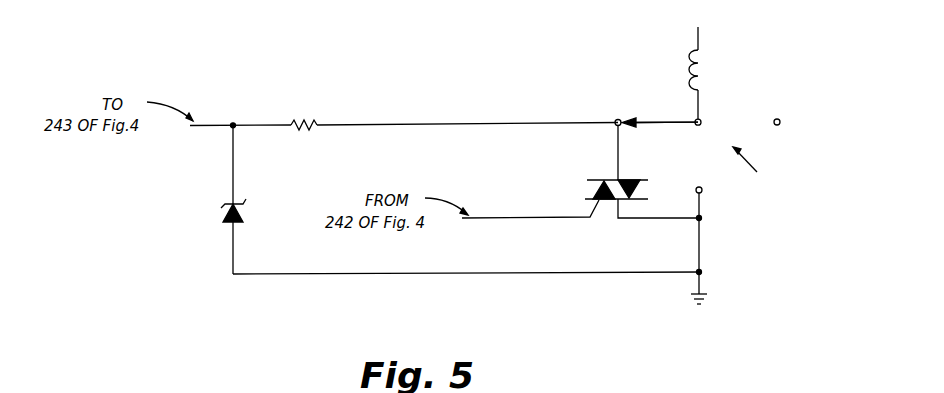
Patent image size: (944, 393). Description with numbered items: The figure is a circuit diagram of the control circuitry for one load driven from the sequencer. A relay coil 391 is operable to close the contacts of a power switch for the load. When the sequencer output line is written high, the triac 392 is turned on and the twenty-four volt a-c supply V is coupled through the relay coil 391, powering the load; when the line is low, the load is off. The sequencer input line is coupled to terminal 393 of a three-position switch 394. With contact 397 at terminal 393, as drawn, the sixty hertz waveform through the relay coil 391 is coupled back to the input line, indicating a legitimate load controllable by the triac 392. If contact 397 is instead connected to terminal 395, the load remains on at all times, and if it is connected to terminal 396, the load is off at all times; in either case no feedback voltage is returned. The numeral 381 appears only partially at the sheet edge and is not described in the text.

The relay coil 391 is at (702, 73).
The triac 392 is at (602, 180).
The terminal 393 is at (616, 120).
The three-position switch 394 is at (759, 171).
The terminal 395 is at (702, 192).
The terminal 396 is at (779, 119).
The contact 397 is at (660, 121).
The partial numeral 381 is at (224, 387).